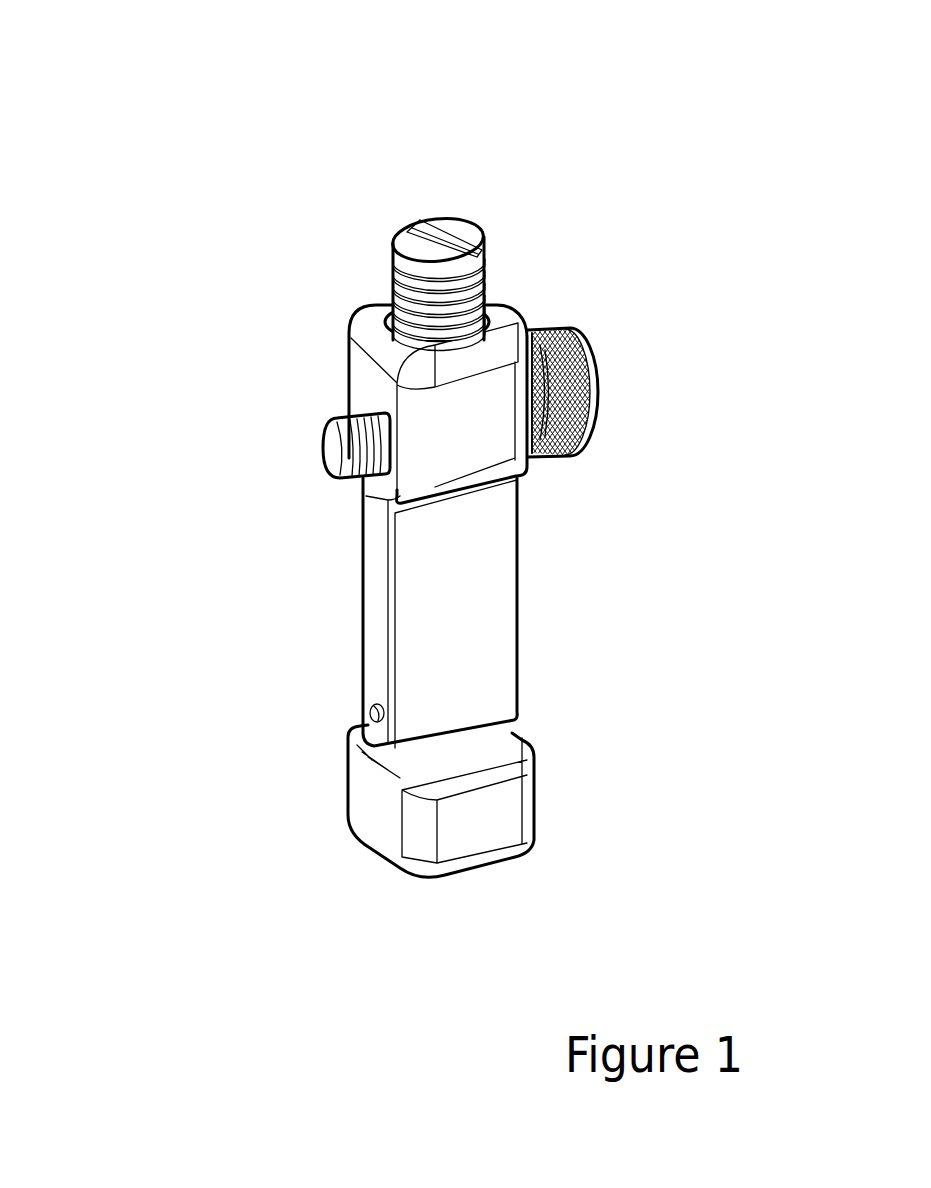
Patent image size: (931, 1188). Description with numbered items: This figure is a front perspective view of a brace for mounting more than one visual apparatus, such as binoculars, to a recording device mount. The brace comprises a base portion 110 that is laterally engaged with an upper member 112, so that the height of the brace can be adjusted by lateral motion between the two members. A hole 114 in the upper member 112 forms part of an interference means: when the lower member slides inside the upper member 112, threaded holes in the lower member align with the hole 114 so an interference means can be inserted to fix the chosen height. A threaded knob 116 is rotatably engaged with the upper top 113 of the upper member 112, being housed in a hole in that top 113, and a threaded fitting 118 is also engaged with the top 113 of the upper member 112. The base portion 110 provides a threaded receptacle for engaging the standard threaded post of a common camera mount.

The base portion 110 is at (488, 810).
The upper member 112 is at (488, 563).
The upper top 113 is at (368, 382).
The hole 114 is at (365, 713).
The threaded knob 116 is at (592, 389).
The threaded fitting 118 is at (474, 277).